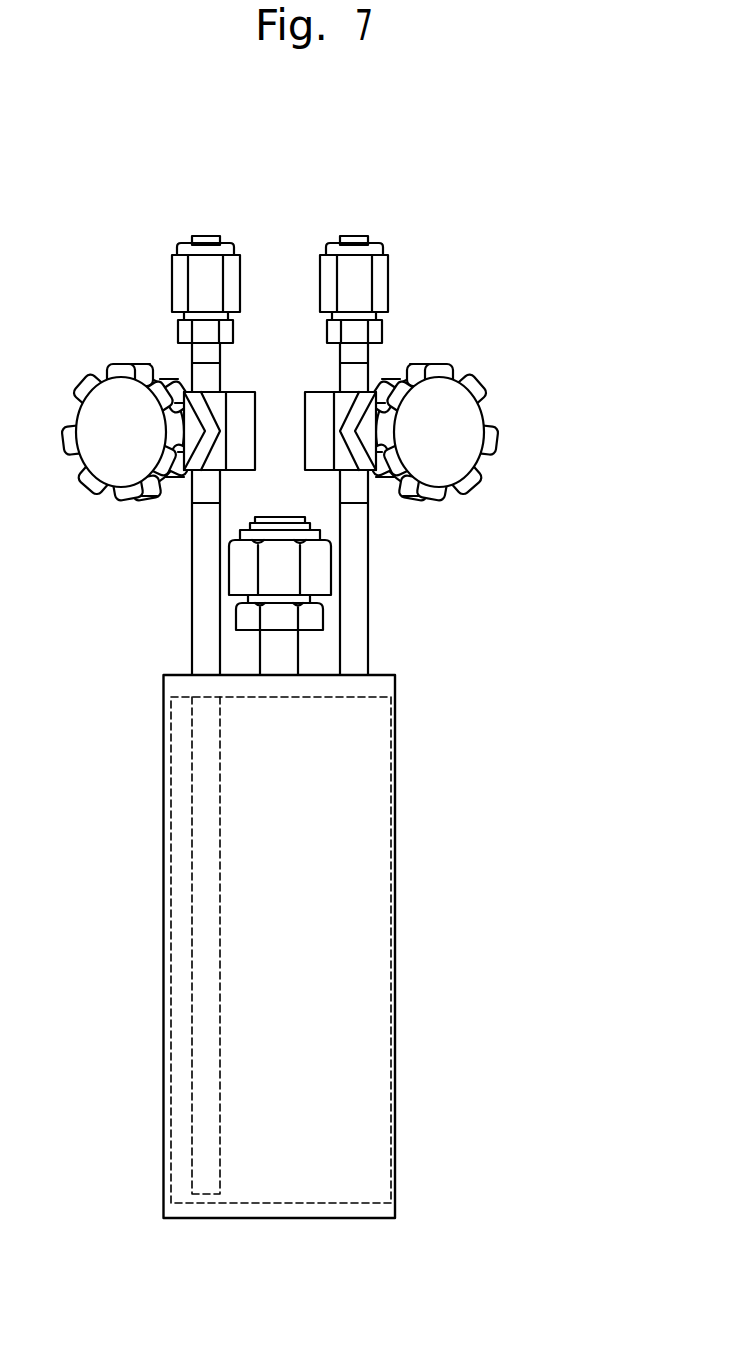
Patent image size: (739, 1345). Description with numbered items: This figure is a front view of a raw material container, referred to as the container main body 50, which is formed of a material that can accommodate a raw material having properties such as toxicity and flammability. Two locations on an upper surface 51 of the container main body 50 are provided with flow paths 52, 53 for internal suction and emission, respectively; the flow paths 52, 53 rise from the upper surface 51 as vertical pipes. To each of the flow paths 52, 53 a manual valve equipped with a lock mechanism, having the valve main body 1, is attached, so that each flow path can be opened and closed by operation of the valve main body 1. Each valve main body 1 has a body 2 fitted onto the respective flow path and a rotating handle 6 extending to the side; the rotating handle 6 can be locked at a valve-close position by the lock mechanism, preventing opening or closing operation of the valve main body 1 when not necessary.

The valve main body 1 is at (104, 461).
The body 2 is at (320, 400).
The rotating handle 6 is at (111, 400).
The container main body 50 is at (280, 1228).
The upper surface 51 is at (385, 672).
The flow path 52 is at (205, 538).
The flow path 53 is at (362, 563).